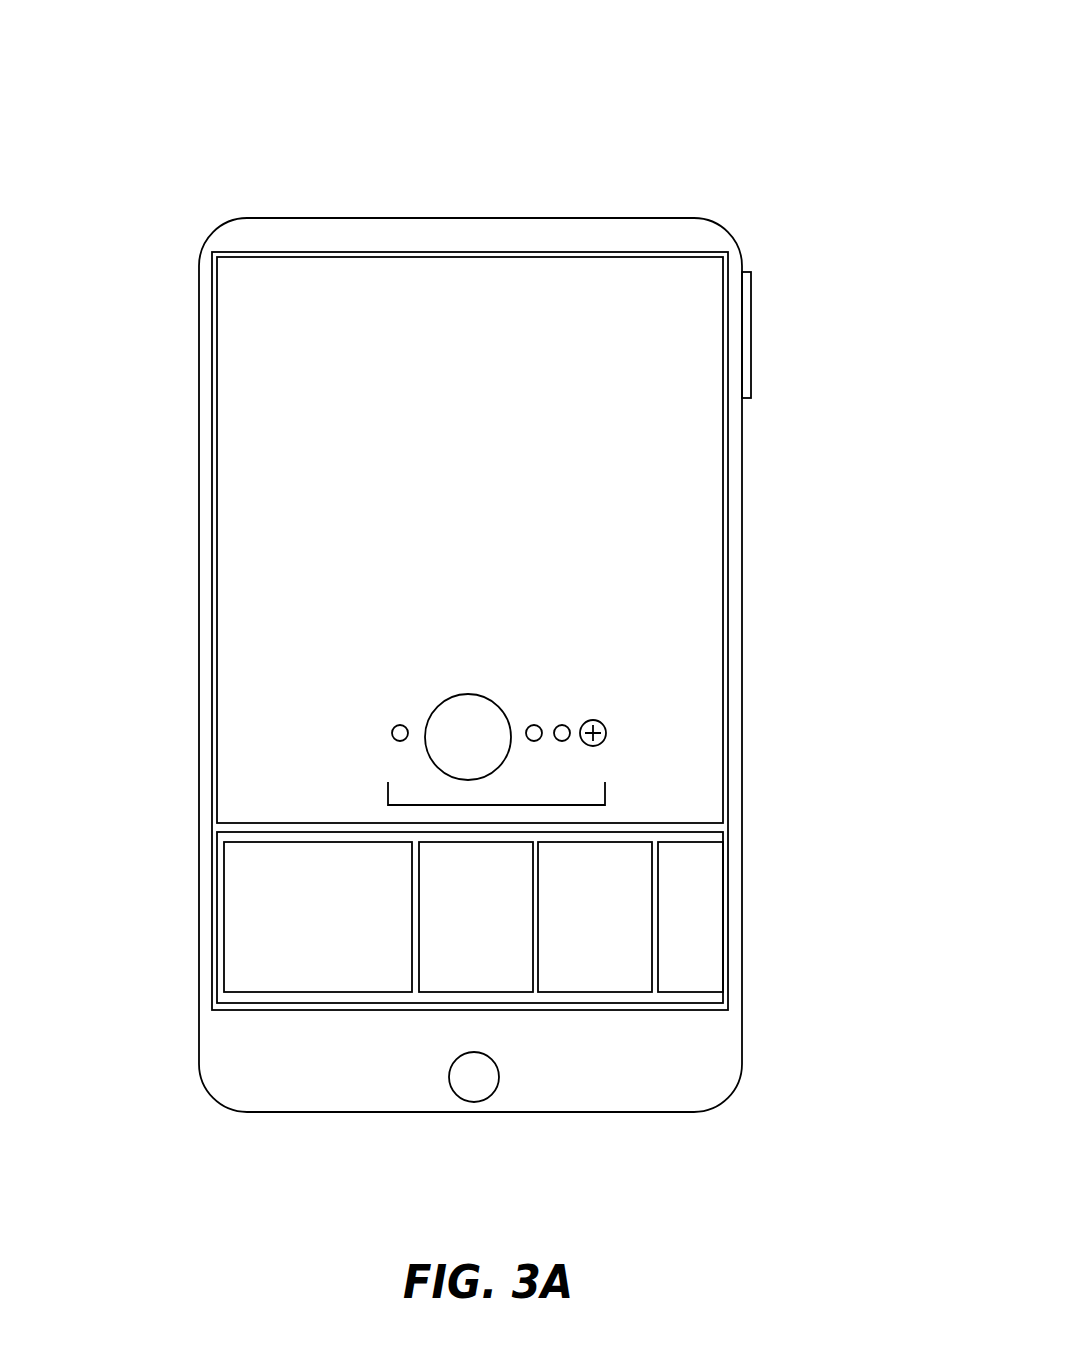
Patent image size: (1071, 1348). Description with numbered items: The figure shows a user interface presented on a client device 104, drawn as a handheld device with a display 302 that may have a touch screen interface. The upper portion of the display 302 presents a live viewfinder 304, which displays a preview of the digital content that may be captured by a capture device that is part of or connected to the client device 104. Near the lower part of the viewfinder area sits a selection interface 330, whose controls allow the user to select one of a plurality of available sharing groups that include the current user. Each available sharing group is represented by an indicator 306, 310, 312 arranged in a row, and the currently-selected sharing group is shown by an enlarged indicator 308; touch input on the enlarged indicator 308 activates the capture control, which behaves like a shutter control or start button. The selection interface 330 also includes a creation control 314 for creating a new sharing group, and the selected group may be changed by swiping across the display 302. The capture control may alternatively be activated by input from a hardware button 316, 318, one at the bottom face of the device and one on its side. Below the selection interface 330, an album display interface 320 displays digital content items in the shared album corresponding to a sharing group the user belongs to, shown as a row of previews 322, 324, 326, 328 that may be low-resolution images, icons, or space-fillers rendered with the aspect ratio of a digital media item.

The client device 104 is at (809, 92).
The display 302 is at (240, 250).
The live viewfinder 304 is at (258, 545).
The indicator 306 is at (405, 717).
The enlarged indicator 308 is at (510, 757).
The indicator 310 is at (537, 718).
The indicator 312 is at (563, 718).
The creation control 314 is at (593, 717).
The hardware button 316 is at (497, 1083).
The hardware button 318 is at (748, 270).
The album display interface 320 is at (215, 848).
The preview 322 is at (325, 987).
The preview 324 is at (447, 987).
The preview 326 is at (605, 995).
The preview 328 is at (693, 995).
The selection interface 330 is at (382, 793).